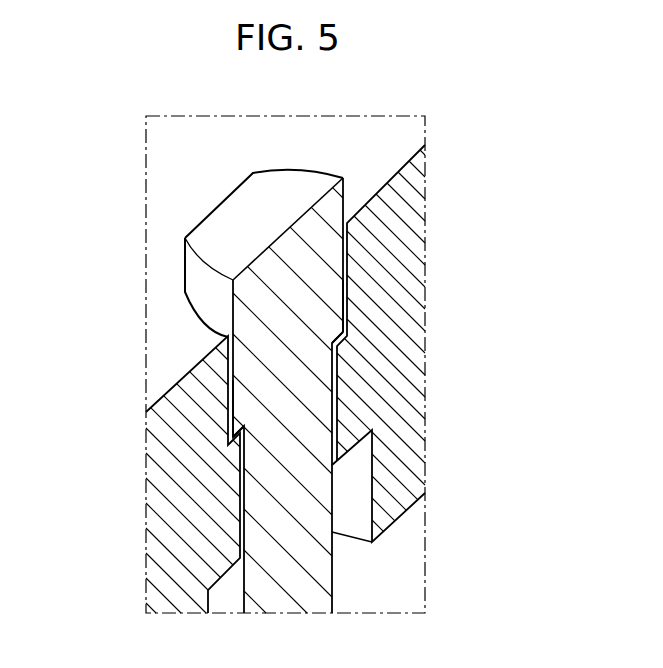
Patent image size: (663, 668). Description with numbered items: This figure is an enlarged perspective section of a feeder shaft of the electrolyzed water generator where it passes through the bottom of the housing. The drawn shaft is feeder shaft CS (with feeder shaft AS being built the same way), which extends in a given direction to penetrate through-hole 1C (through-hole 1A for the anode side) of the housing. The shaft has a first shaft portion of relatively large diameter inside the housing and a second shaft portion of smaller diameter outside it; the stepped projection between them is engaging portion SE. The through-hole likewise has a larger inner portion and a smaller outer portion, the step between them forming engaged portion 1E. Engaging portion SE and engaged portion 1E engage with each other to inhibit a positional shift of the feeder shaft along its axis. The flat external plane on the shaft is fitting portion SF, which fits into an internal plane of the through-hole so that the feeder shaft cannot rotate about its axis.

The through-hole 1C is at (287, 344).
The through-hole 1A is at (287, 344).
The fitting portion SF is at (223, 200).
The feeder shaft CS is at (249, 206).
The feeder shaft AS is at (209, 287).
The engaging portion SE is at (333, 323).
The engaged portion 1E is at (340, 348).